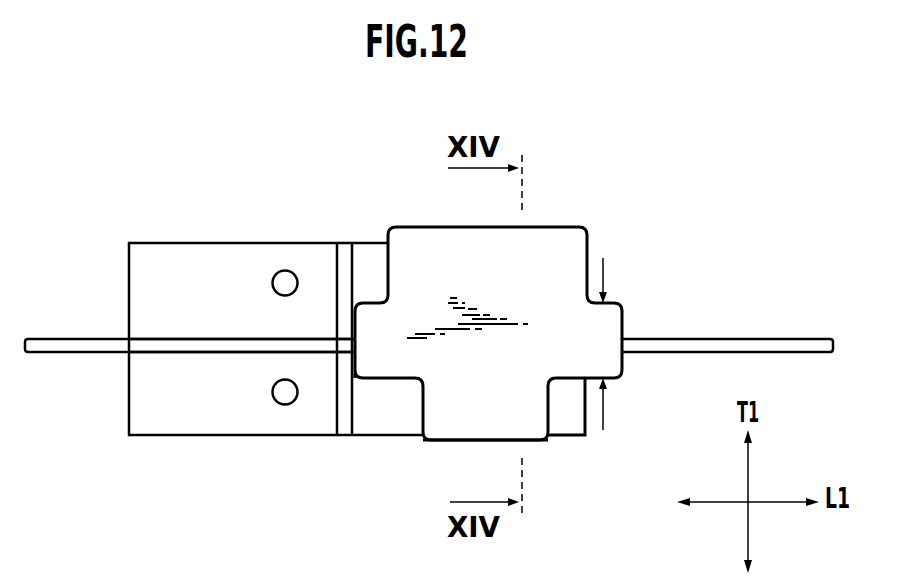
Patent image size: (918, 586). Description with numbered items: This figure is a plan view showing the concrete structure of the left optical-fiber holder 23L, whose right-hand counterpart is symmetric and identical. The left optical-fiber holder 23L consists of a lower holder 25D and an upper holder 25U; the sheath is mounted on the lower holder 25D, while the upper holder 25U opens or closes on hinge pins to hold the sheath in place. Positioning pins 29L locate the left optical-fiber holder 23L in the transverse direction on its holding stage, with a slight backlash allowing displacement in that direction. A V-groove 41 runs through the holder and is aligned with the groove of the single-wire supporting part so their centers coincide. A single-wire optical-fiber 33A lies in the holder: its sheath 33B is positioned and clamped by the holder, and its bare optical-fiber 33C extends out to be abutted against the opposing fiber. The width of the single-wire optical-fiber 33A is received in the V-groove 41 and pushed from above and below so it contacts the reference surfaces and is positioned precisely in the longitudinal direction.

The upper holder 25U is at (427, 243).
The lower holder 25D is at (170, 424).
The positioning pin 29L is at (296, 271).
The V-groove 41 is at (225, 345).
The single-wire optical-fiber 33A is at (95, 339).
The sheath 33B is at (85, 346).
The bare optical-fiber 33C is at (728, 345).
The left optical-fiber holder 23L is at (368, 446).